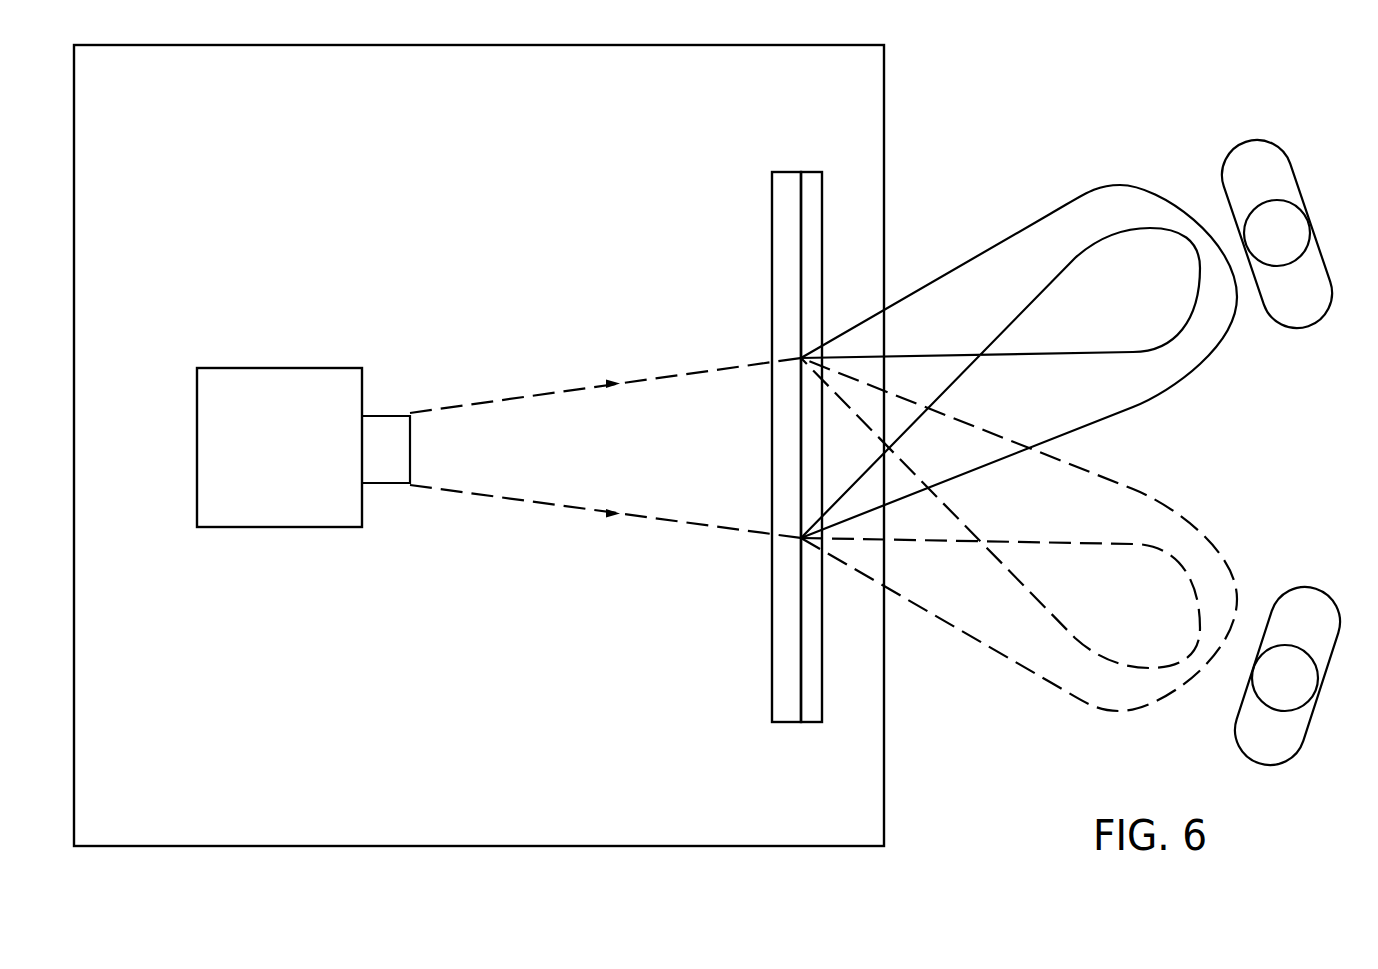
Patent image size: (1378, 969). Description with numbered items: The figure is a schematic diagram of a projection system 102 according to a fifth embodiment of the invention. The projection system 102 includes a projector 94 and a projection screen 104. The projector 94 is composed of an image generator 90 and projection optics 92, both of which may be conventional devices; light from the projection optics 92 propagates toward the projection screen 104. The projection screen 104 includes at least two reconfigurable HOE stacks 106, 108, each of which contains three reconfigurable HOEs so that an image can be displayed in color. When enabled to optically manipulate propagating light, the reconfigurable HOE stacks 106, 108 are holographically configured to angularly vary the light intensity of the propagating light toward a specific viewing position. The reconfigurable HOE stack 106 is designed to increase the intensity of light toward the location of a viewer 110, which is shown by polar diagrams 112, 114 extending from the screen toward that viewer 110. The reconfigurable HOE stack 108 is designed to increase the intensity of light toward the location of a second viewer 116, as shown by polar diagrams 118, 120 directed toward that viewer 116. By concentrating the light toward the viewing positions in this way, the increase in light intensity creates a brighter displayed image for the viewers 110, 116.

The image generator 90 is at (292, 373).
The projection optics 92 is at (363, 397).
The projector 94 is at (303, 475).
The projection system 102 is at (532, 55).
The projection screen 104 is at (802, 431).
The reconfigurable HOE stack 106 is at (795, 178).
The reconfigurable HOE stack 108 is at (811, 178).
The viewer 110 is at (1293, 165).
The polar diagram 112 is at (1120, 185).
The polar diagram 114 is at (1178, 392).
The viewer 116 is at (1323, 673).
The polar diagram 118 is at (1190, 497).
The polar diagram 120 is at (1068, 688).